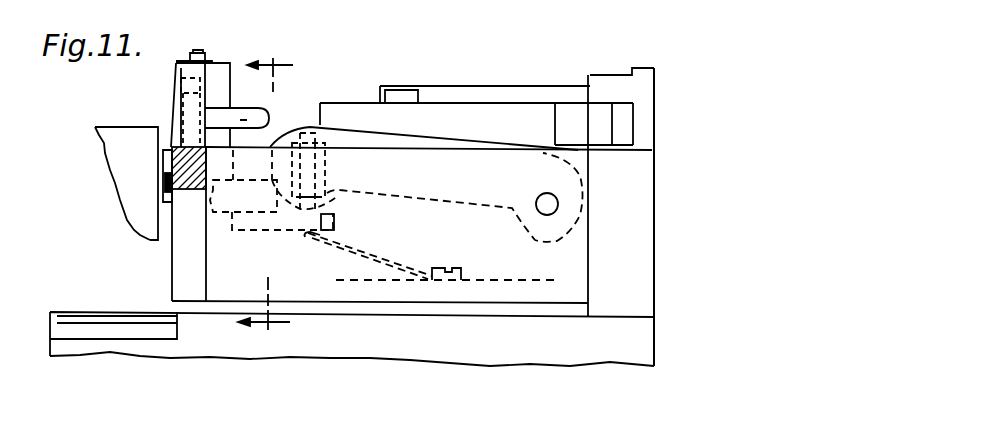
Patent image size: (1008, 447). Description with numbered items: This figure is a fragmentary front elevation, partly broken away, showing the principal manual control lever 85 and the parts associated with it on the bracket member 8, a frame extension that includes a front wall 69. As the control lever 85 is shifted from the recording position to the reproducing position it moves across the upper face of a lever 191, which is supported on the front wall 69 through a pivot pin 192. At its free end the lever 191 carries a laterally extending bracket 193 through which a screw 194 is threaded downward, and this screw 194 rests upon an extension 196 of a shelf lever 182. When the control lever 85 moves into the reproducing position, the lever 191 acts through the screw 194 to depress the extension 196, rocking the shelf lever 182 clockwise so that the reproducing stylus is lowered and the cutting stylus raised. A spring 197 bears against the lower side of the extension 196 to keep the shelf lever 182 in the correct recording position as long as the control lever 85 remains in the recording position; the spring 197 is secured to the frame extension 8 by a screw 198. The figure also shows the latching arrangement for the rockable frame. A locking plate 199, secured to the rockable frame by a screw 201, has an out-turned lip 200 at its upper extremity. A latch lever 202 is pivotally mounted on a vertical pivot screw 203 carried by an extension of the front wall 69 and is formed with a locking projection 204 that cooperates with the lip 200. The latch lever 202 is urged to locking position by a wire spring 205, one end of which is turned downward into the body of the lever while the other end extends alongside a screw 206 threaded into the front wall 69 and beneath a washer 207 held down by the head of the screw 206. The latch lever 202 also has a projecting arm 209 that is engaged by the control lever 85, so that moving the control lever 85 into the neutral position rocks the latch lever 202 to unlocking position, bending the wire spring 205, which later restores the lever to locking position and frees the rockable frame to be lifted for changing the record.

The bracket member 8 is at (658, 250).
The front wall 69 is at (443, 158).
The manual control lever 85 is at (503, 113).
The shelf lever 182 is at (227, 210).
The lever 191 is at (363, 142).
The pivot pin 192 is at (547, 215).
The bracket 193 is at (325, 168).
The screw 194 is at (305, 133).
The extension 196 is at (336, 222).
The spring 197 is at (385, 253).
The screw 198 is at (456, 266).
The locking plate 199 is at (163, 175).
The out-turned lip 200 is at (163, 163).
The screw 201 is at (159, 245).
The latch lever 202 is at (205, 100).
The vertical pivot screw 203 is at (181, 84).
The locking projection 204 is at (165, 137).
The wire spring 205 is at (193, 53).
The screw 206 is at (206, 55).
The washer 207 is at (214, 61).
The projecting arm 209 is at (237, 130).